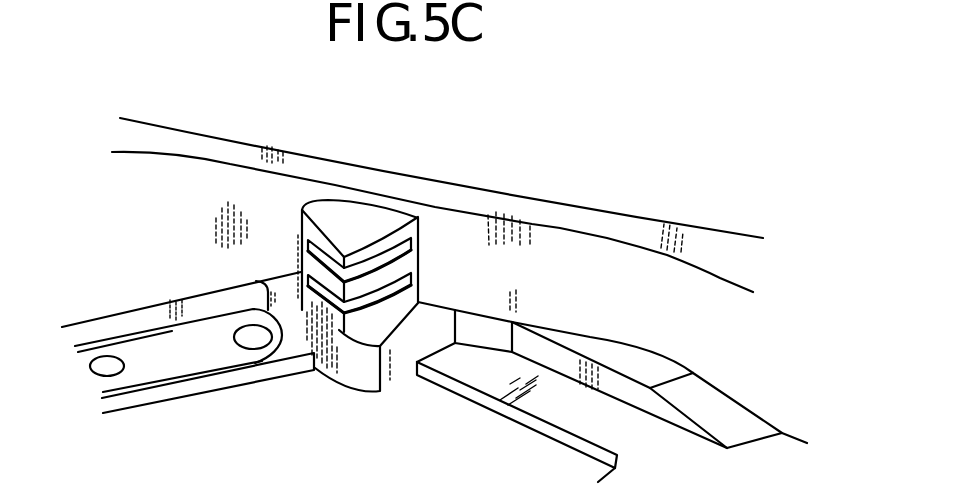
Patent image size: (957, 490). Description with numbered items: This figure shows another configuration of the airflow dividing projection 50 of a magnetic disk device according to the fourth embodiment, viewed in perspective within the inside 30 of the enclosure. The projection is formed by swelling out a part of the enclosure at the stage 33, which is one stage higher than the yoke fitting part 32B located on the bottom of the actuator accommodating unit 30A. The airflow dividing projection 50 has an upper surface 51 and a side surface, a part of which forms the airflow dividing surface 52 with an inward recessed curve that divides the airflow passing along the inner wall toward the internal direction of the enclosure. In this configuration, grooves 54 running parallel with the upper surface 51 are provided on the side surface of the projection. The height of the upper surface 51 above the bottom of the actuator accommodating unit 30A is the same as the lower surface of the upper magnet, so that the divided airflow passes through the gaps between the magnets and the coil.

The inside of the enclosure 30 is at (230, 191).
The actuator accommodating unit 30A is at (525, 471).
The yoke fitting part 32B is at (168, 353).
The stage 33 is at (177, 278).
The airflow dividing projection 50 is at (433, 270).
The upper surface 51 is at (347, 222).
The airflow dividing surface 52 is at (370, 272).
The grooves 54 is at (362, 298).